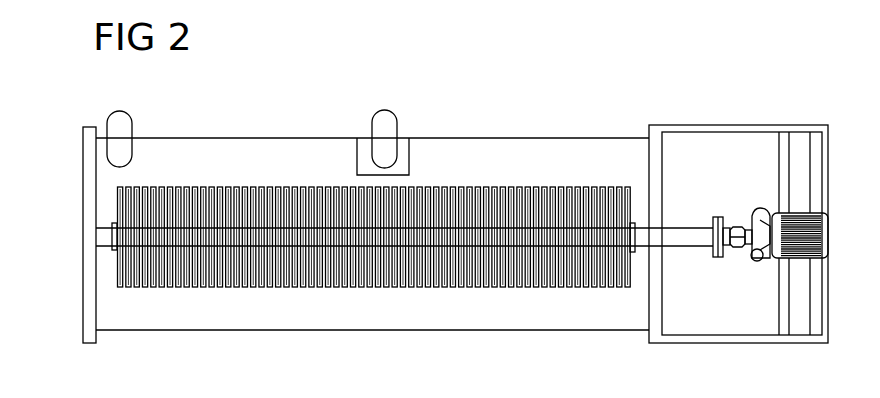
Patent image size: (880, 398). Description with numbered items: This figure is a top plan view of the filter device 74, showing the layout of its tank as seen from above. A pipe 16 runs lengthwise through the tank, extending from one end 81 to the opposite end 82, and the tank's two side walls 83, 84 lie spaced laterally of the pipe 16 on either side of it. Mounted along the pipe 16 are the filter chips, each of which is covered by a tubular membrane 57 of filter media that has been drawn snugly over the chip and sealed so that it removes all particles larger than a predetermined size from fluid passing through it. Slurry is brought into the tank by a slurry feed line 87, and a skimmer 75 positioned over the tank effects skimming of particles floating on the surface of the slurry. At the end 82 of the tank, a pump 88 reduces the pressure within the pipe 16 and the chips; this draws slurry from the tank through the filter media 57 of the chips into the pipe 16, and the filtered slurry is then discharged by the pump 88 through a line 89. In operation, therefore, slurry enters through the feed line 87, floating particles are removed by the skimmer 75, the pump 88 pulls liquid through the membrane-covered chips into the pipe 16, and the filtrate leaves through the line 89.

The pipe 16 is at (670, 233).
The tubular membrane 57 is at (374, 292).
The filter device 74 is at (598, 352).
The skimmer 75 is at (409, 148).
The end 81 is at (92, 274).
The end 82 is at (664, 268).
The side wall 83 is at (263, 138).
The side wall 84 is at (260, 330).
The slurry feed line 87 is at (132, 113).
The pump 88 is at (768, 203).
The line 89 is at (761, 262).